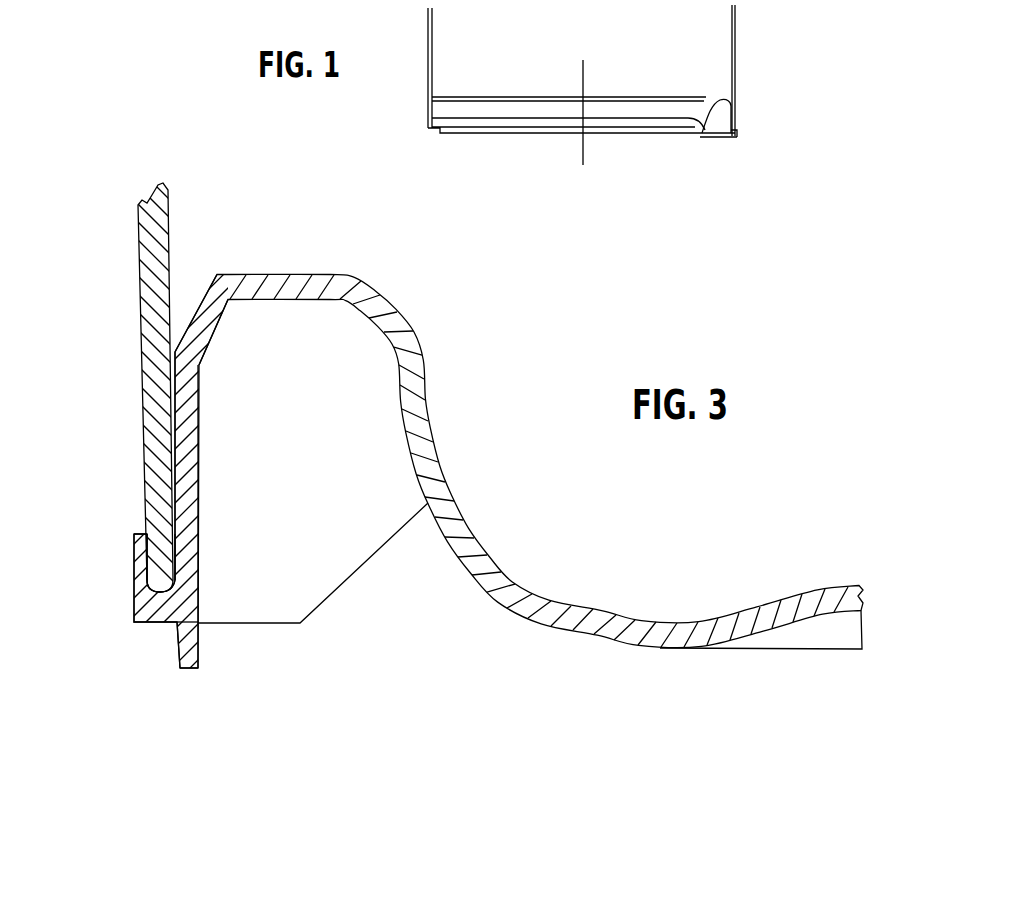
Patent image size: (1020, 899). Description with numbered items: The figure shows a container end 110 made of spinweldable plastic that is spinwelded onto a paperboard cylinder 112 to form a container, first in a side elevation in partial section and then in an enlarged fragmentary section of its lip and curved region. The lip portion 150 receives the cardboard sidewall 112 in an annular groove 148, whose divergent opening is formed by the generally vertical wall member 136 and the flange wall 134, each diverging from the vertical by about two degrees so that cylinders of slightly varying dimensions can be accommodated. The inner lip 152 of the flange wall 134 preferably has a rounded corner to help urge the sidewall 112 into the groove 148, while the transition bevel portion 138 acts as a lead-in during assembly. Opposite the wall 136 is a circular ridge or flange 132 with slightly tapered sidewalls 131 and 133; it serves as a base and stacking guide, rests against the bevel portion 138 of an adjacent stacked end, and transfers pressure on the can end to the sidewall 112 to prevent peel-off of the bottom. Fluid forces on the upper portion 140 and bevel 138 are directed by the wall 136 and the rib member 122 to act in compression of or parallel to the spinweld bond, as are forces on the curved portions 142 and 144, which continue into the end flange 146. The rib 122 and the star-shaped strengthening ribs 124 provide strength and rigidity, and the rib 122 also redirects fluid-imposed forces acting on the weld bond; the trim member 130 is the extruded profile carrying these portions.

In FIG. 1, the container end 110 is at (603, 162).
In FIG. 1, the paperboard cylinder 112 is at (737, 50).
In FIG. 3, the paperboard cylinder 112 is at (138, 268).
In FIG. 1, the fin or rib member 122 is at (714, 118).
In FIG. 3, the fin or rib member 122 is at (364, 566).
In FIG. 3, the strengthening rib 124 is at (829, 636).
In FIG. 3, the extruded trim member 130 is at (433, 597).
In FIG. 3, the tapered sidewall 131 is at (178, 658).
In FIG. 1, the circular ridge or flange 132 is at (742, 137).
In FIG. 3, the circular ridge or flange 132 is at (190, 672).
In FIG. 3, the tapered sidewall 133 is at (198, 646).
In FIG. 1, the flange wall 134 is at (740, 125).
In FIG. 3, the flange wall 134 is at (136, 576).
In FIG. 3, the wall member 136 is at (200, 456).
In FIG. 3, the transition bevel portion 138 is at (212, 346).
In FIG. 3, the upper portion 140 is at (290, 272).
In FIG. 3, the curved portion 142 is at (422, 338).
In FIG. 3, the curved portion 144 is at (485, 514).
In FIG. 3, the end flange 146 is at (793, 590).
In FIG. 3, the annular groove 148 is at (178, 553).
In FIG. 3, the lip portion 150 is at (157, 643).
In FIG. 3, the inner lip 152 is at (148, 540).